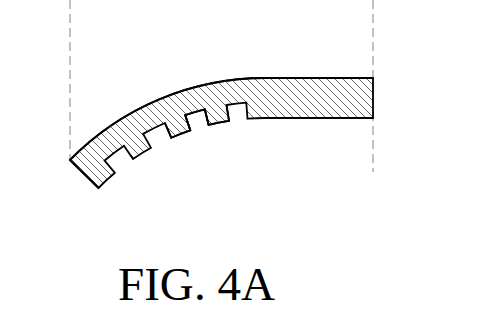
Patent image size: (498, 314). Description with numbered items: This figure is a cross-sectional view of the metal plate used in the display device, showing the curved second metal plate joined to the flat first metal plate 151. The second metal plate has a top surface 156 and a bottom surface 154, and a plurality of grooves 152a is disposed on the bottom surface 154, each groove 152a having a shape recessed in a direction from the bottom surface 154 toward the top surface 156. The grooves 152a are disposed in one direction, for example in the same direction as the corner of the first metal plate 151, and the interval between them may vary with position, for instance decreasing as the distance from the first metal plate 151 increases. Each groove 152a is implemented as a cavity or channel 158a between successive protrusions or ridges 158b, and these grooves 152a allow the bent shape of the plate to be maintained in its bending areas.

The first metal plate 151 is at (314, 108).
The groove 152a is at (208, 134).
The bottom surface 154 is at (109, 187).
The top surface 156 is at (135, 109).
The cavity or channel 158a is at (162, 146).
The protrusion or ridge 158b is at (221, 118).